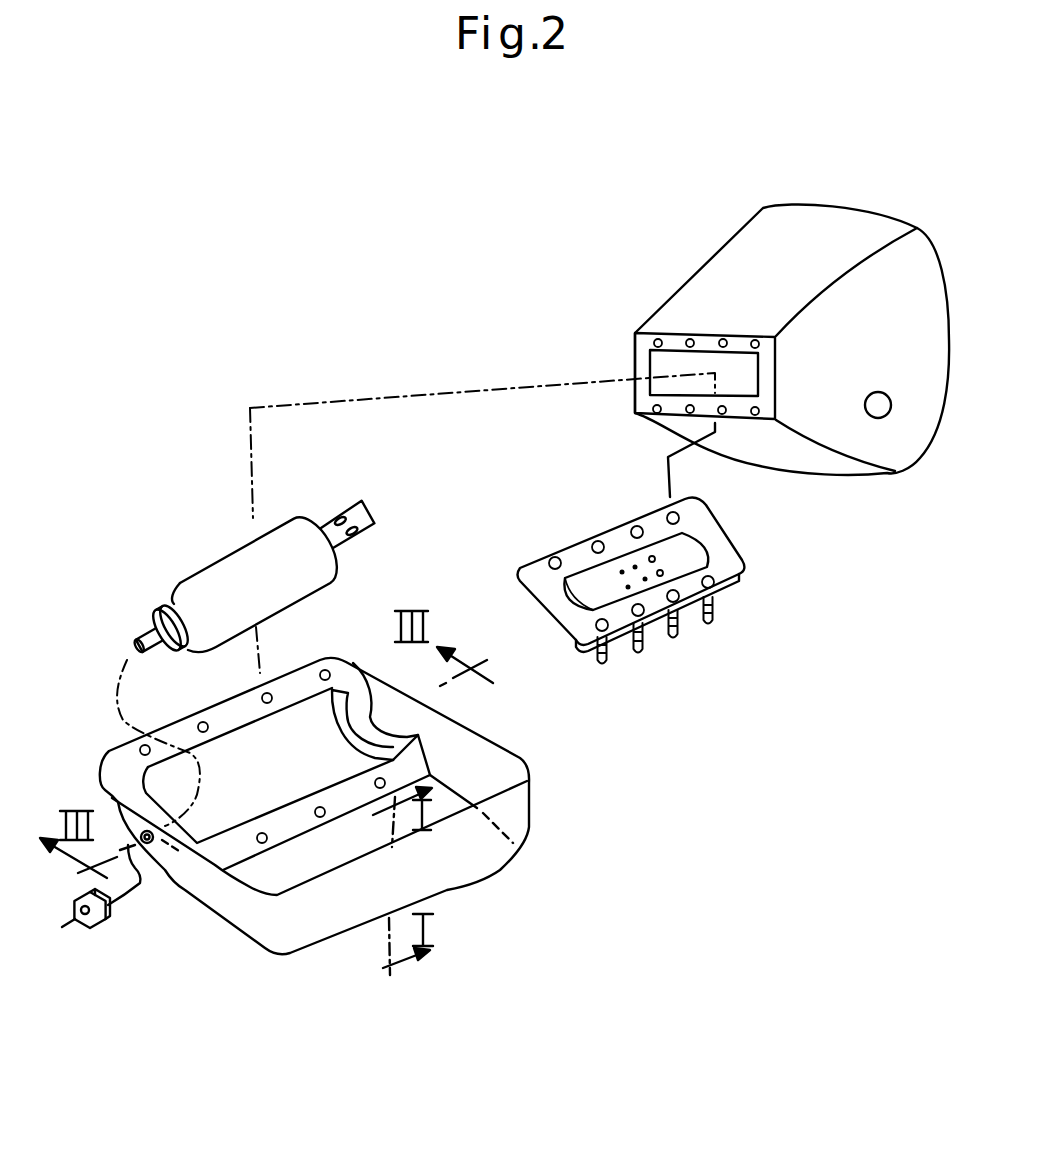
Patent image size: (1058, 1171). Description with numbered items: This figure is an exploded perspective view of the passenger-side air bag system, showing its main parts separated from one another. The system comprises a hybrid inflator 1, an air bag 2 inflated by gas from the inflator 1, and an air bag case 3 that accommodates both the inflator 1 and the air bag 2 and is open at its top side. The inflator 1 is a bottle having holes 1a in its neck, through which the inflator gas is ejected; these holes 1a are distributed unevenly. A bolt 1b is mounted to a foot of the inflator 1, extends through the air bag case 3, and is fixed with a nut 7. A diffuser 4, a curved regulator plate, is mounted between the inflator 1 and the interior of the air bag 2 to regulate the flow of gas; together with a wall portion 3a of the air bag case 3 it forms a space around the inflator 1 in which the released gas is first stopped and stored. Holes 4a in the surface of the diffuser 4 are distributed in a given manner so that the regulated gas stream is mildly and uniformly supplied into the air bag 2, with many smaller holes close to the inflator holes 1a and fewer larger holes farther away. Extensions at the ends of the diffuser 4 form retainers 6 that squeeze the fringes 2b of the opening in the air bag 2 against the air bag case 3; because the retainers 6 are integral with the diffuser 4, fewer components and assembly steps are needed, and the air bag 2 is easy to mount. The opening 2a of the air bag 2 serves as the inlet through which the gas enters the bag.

The hybrid inflator 1 is at (235, 577).
The holes 1a is at (358, 538).
The bolt 1b is at (146, 632).
The air bag 2 is at (708, 278).
The opening 2a is at (663, 367).
The fringes of the opening in the air bag 2b is at (712, 337).
The air bag case 3 is at (520, 812).
The wall portion of the air bag case 3a is at (282, 781).
The diffuser 4 is at (600, 585).
The holes in the diffuser 4a is at (655, 559).
The retainers 6 is at (733, 570).
The nut 7 is at (105, 917).